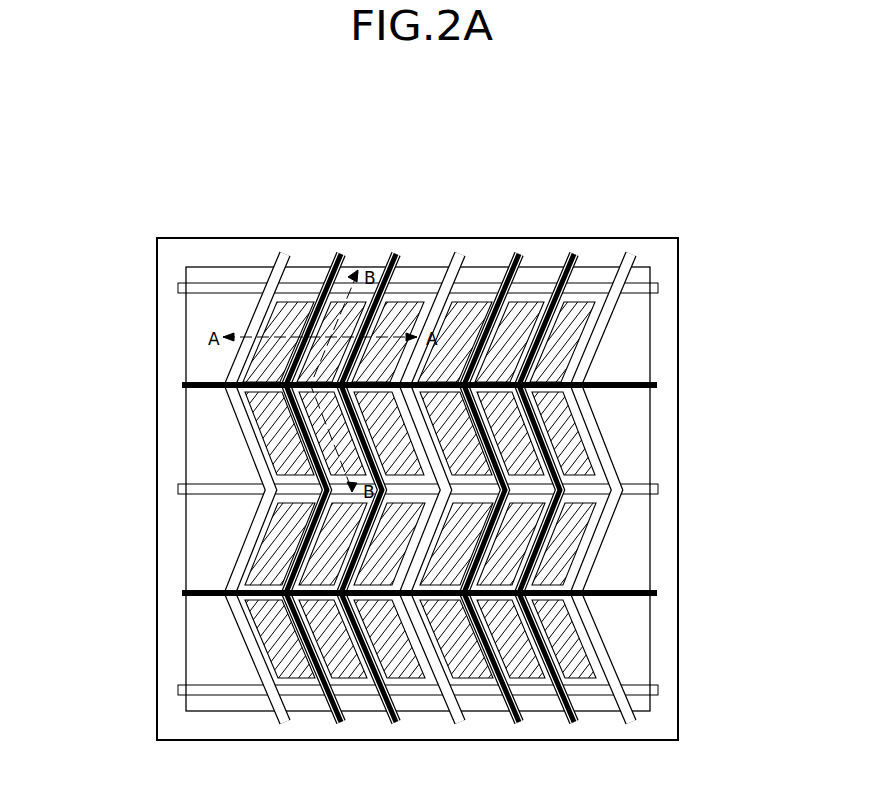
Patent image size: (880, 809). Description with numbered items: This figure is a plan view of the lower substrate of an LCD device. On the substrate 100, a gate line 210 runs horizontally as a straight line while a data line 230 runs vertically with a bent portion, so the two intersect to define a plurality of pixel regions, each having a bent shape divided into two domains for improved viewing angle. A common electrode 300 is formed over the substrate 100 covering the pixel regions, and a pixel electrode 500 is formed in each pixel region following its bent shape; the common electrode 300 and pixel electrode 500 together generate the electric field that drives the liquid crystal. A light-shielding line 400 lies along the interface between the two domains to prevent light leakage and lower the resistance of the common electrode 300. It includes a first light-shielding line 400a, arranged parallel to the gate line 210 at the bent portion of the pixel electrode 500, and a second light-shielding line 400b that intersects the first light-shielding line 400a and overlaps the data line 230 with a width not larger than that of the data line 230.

The substrate 100 is at (678, 493).
The common electrode 300 is at (650, 449).
The gate line 210 is at (590, 278).
The data line 230 is at (443, 278).
The pixel electrode 500 is at (572, 341).
The light-shielding line 400 is at (337, 488).
The first light-shielding line 400a is at (187, 388).
The second light-shielding line 400b is at (306, 452).